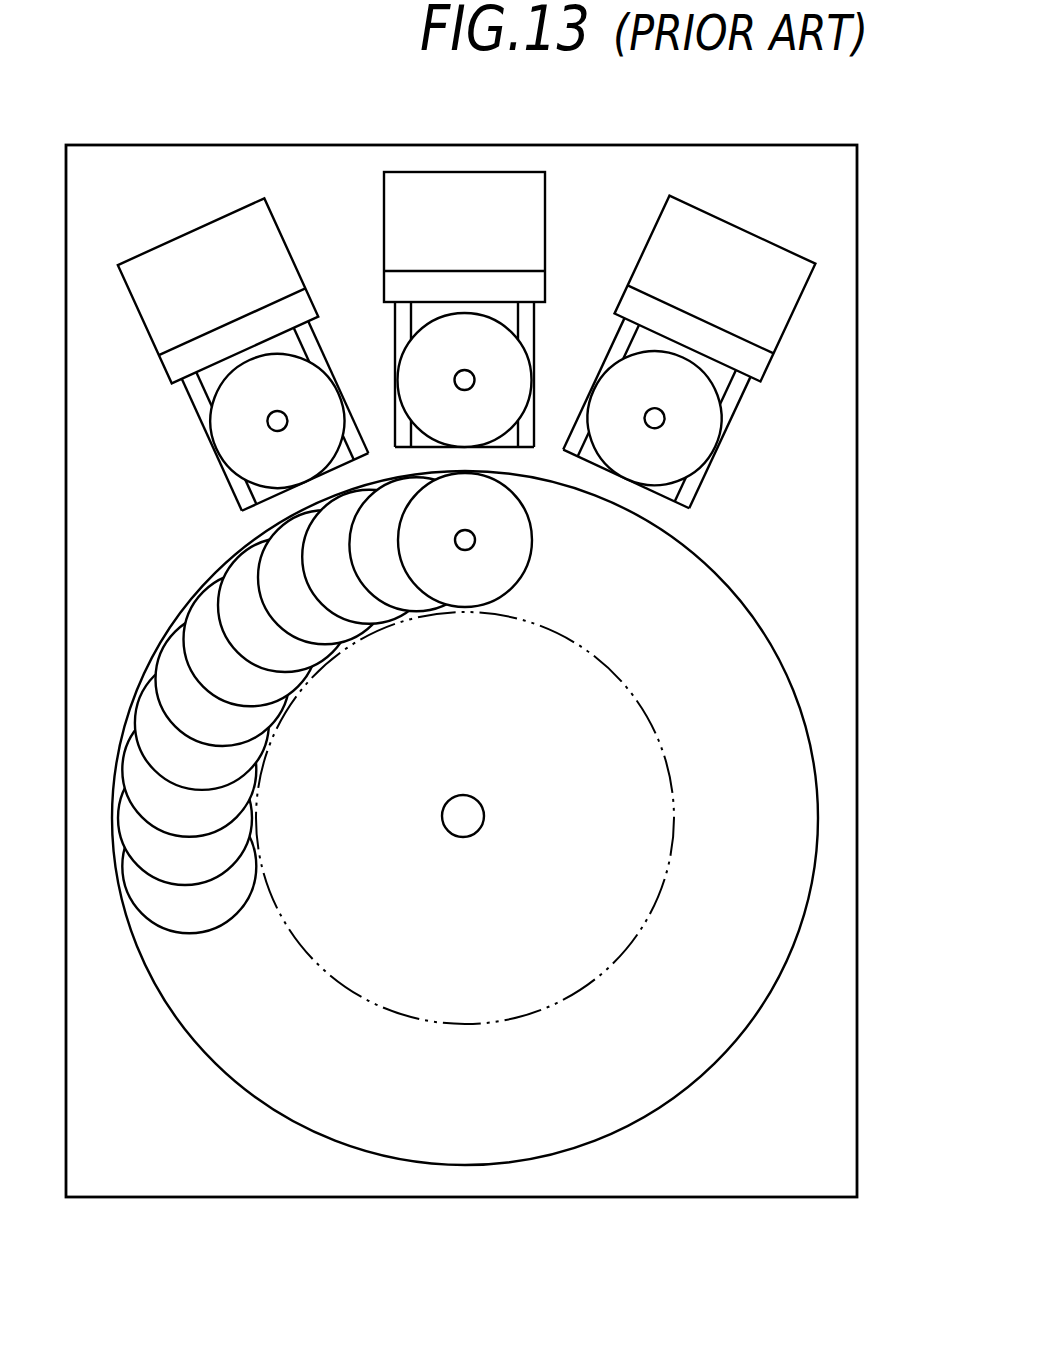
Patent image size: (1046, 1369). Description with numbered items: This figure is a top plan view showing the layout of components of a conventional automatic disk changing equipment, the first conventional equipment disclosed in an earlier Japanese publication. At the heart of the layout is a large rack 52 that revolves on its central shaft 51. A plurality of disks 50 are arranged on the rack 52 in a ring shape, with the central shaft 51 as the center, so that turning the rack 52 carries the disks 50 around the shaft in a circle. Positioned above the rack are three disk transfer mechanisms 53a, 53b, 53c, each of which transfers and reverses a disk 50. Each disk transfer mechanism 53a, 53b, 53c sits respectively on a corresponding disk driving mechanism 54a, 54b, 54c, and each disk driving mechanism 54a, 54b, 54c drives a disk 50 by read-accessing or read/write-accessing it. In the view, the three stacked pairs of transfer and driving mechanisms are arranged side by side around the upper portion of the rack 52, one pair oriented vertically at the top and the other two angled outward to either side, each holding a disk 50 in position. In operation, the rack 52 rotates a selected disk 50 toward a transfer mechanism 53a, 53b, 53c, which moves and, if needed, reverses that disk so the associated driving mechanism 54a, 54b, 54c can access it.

The disk 50 is at (213, 431).
The central shaft 51 is at (484, 822).
The rack 52 is at (715, 1062).
The disk transfer mechanism 53a is at (702, 490).
The disk transfer mechanism 53b is at (537, 327).
The disk transfer mechanism 53c is at (232, 497).
The disk driving mechanism 54a is at (780, 310).
The disk driving mechanism 54b is at (531, 212).
The disk driving mechanism 54c is at (196, 247).